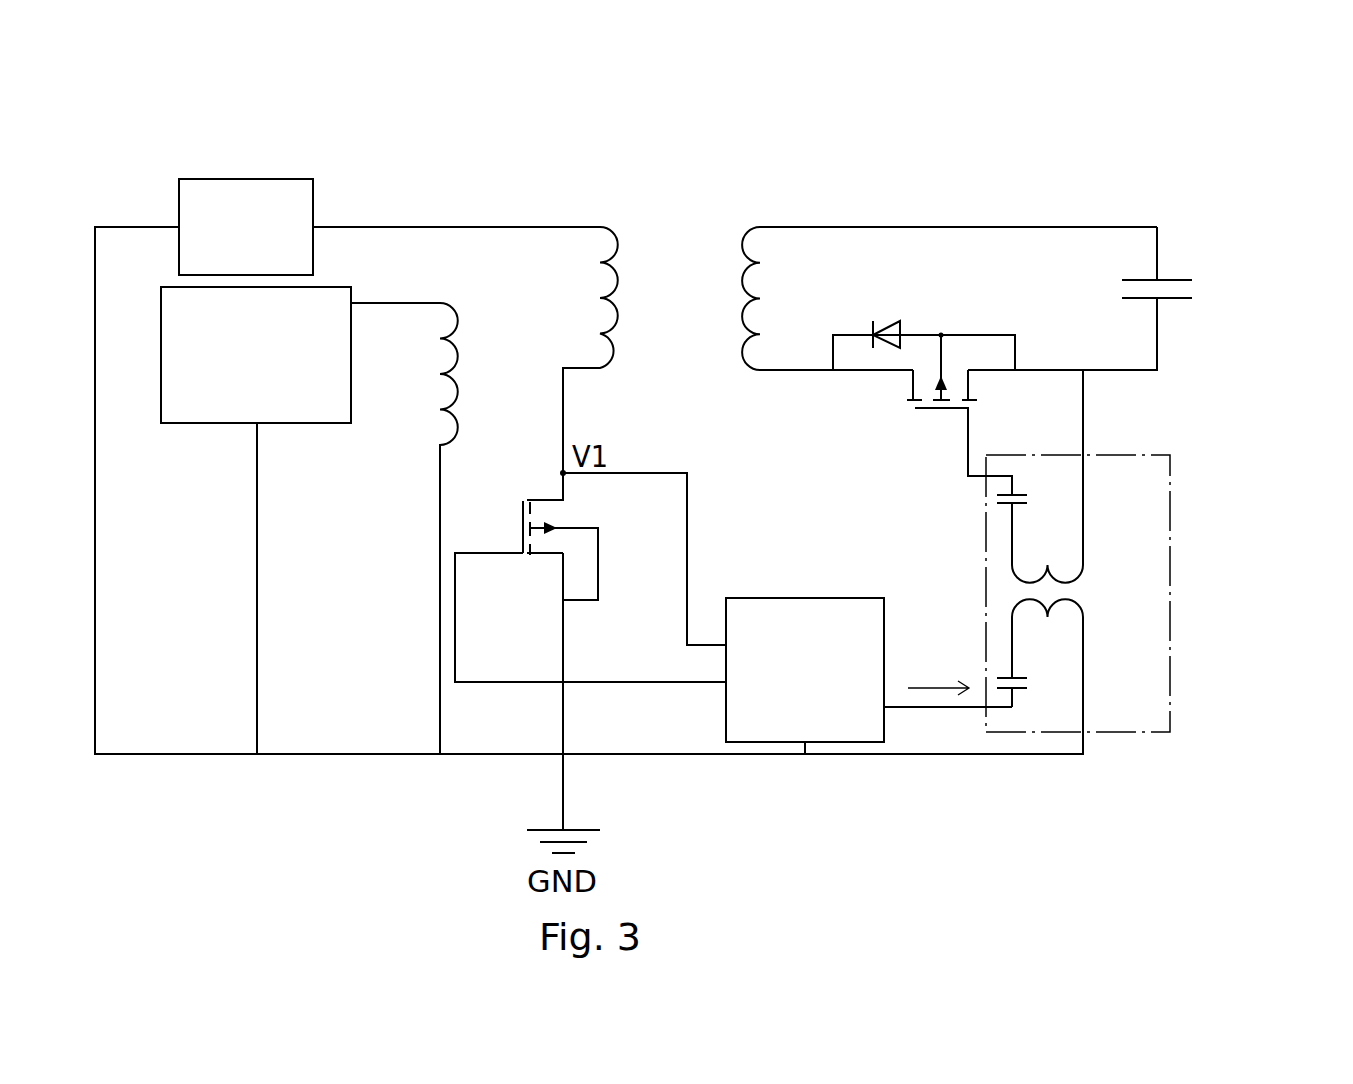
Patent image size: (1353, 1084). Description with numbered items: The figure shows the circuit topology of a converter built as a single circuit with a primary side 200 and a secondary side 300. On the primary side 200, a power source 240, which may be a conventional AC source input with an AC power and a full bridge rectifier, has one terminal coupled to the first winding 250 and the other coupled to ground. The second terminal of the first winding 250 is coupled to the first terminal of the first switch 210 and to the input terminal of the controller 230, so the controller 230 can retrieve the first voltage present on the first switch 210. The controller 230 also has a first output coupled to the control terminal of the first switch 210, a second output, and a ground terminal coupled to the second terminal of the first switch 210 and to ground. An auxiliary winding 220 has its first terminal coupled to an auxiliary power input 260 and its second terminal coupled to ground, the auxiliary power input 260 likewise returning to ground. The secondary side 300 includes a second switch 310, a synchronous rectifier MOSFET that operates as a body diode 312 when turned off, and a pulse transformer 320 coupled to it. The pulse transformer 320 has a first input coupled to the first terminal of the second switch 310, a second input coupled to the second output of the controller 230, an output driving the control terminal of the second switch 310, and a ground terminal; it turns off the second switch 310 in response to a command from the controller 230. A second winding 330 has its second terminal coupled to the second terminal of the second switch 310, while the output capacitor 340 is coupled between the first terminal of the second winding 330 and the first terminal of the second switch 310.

The primary side 200 is at (374, 166).
The first switch 210 is at (528, 567).
The auxiliary winding 220 is at (427, 420).
The controller 230 is at (803, 597).
The power source 240 is at (245, 178).
The first winding 250 is at (613, 227).
The auxiliary power input 260 is at (198, 425).
The secondary side 300 is at (989, 164).
The second switch 310 is at (930, 417).
The body diode 312 is at (888, 318).
The pulse transformer 320 is at (1170, 550).
The second winding 330 is at (740, 230).
The output capacitor 340 is at (1173, 277).